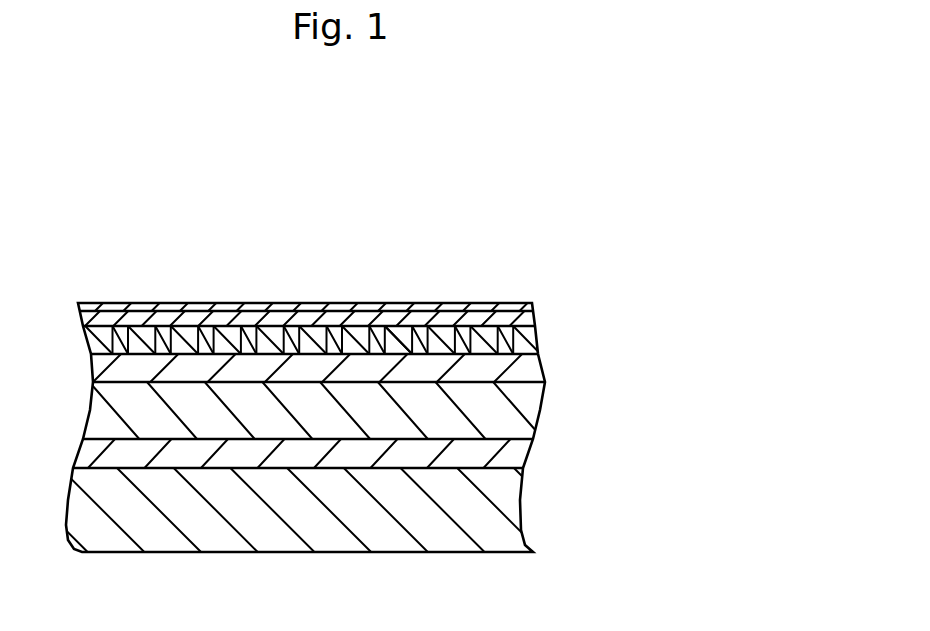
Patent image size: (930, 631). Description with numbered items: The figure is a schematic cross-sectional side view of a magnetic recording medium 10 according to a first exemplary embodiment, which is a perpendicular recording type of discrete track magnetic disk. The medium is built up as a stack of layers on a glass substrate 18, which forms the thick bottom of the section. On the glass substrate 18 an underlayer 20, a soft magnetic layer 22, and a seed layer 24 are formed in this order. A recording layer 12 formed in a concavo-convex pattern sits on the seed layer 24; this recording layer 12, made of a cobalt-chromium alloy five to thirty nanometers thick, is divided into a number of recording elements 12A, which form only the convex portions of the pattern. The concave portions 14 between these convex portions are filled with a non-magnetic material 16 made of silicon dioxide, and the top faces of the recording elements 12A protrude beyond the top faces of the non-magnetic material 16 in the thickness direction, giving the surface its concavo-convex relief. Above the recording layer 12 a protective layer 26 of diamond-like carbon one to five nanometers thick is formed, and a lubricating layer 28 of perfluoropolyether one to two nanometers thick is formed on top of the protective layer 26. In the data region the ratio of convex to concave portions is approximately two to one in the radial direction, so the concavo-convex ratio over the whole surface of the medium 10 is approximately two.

The magnetic recording medium 10 is at (320, 160).
The recording layer 12 is at (552, 342).
The recording elements 12A is at (393, 333).
The concave portions 14 is at (247, 334).
The non-magnetic material 16 is at (335, 335).
The glass substrate 18 is at (523, 495).
The underlayer 20 is at (534, 452).
The soft magnetic layer 22 is at (547, 412).
The seed layer 24 is at (547, 368).
The protective layer 26 is at (537, 321).
The lubricating layer 28 is at (533, 305).